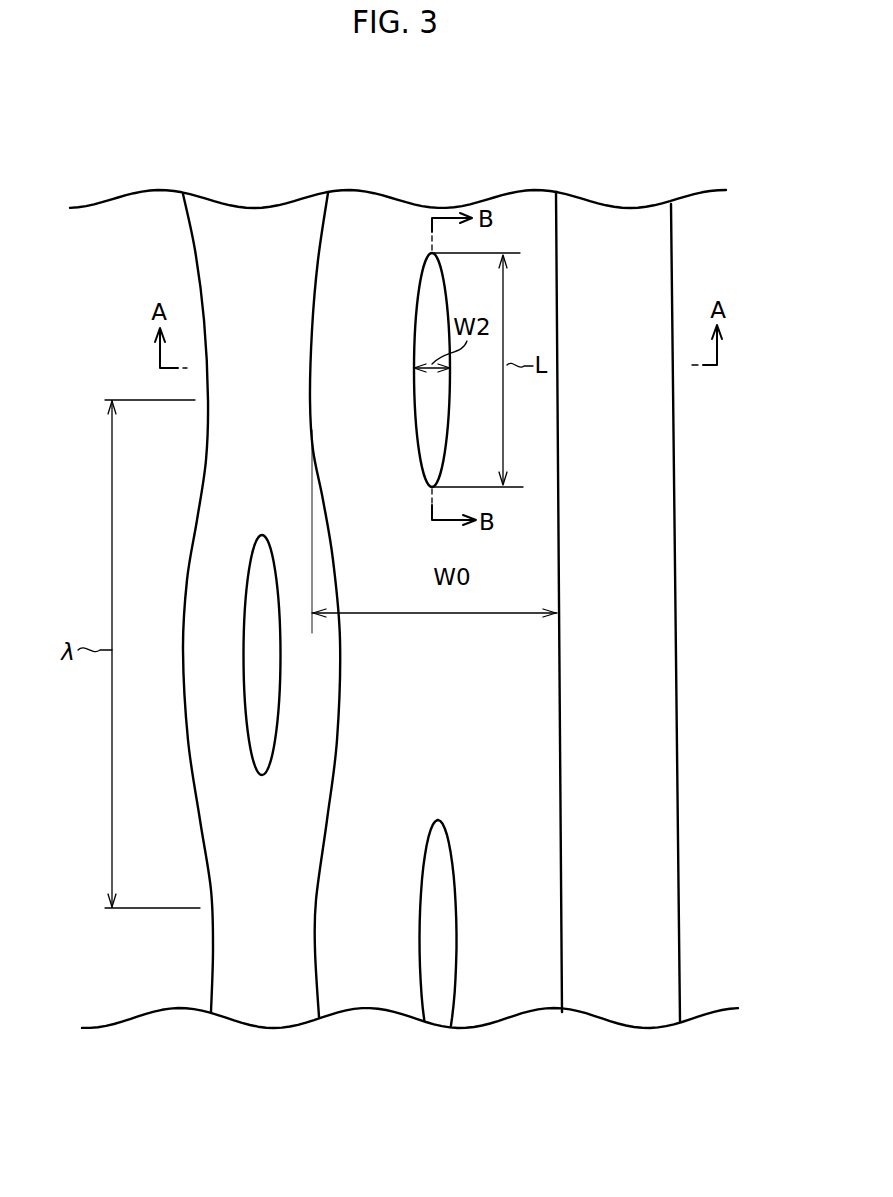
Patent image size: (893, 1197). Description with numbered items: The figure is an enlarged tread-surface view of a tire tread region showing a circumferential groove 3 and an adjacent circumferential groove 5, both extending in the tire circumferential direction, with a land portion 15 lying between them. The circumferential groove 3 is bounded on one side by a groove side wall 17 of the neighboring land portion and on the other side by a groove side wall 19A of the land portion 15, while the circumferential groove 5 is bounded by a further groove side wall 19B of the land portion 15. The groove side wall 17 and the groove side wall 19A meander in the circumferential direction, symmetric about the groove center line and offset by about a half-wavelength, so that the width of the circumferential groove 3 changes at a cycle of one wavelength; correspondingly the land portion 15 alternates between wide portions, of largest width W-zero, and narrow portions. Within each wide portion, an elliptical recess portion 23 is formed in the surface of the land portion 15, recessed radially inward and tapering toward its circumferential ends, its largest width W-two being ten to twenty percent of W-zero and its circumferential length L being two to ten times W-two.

The circumferential groove 3 is at (261, 560).
The circumferential groove 5 is at (626, 198).
The land portion 15 is at (400, 212).
The groove side wall 17 is at (191, 225).
The groove side wall 19A is at (323, 225).
The groove side wall 19B is at (558, 228).
The recess portion 23 is at (422, 297).